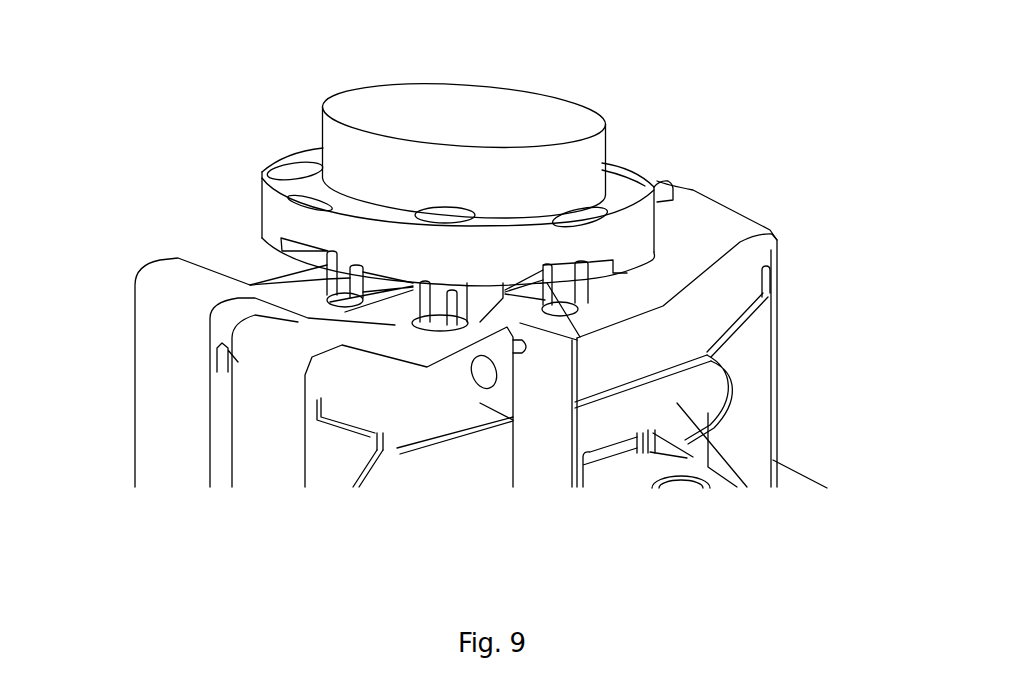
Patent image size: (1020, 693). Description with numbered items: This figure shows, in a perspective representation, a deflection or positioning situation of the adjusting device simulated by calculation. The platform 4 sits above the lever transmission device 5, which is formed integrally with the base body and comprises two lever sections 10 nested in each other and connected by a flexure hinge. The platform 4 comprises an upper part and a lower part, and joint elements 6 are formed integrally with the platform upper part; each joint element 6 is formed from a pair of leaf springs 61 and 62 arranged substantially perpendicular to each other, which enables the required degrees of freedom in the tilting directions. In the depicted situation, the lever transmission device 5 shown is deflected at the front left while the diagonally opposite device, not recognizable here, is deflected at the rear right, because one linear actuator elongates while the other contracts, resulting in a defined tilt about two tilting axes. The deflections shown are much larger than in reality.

The platform 4 is at (652, 163).
The lever transmission device 5 is at (260, 433).
The joint element 6 is at (334, 281).
The lever section 10 is at (440, 393).
The leaf spring 61 is at (447, 327).
The leaf spring 62 is at (430, 295).